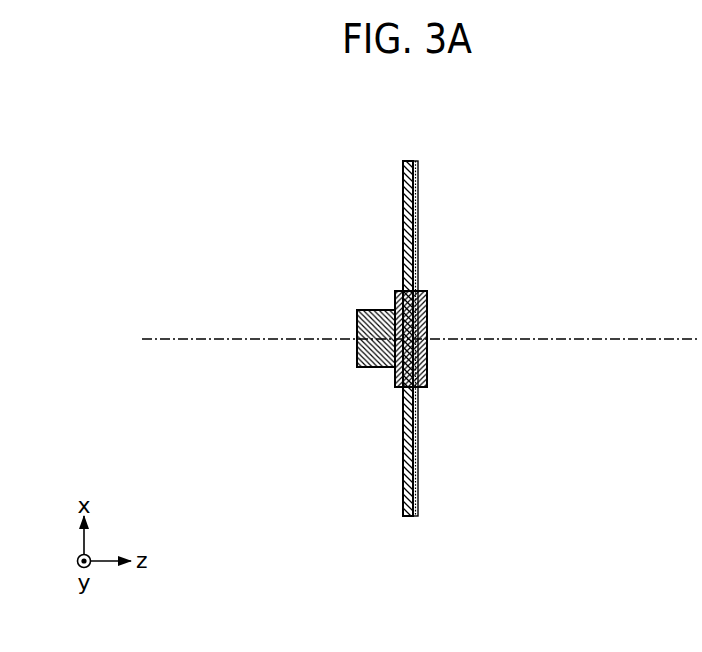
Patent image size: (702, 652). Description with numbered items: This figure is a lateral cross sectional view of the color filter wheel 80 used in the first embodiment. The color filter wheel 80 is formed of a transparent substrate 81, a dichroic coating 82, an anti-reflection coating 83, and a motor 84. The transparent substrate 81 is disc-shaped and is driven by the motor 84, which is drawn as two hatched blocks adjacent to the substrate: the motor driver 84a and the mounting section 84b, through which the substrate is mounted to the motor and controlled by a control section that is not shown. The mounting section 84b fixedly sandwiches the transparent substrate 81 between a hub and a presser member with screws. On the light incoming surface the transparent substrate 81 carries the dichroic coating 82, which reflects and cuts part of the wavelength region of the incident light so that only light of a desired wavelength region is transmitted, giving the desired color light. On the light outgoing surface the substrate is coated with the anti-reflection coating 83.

The color filter wheel 80 is at (447, 156).
The transparent substrate 81 is at (405, 515).
The dichroic coating 82 is at (413, 497).
The anti-reflection coating 83 is at (404, 427).
The motor 84 is at (232, 213).
The motor driver 84a is at (357, 323).
The mounting section 84b is at (395, 292).